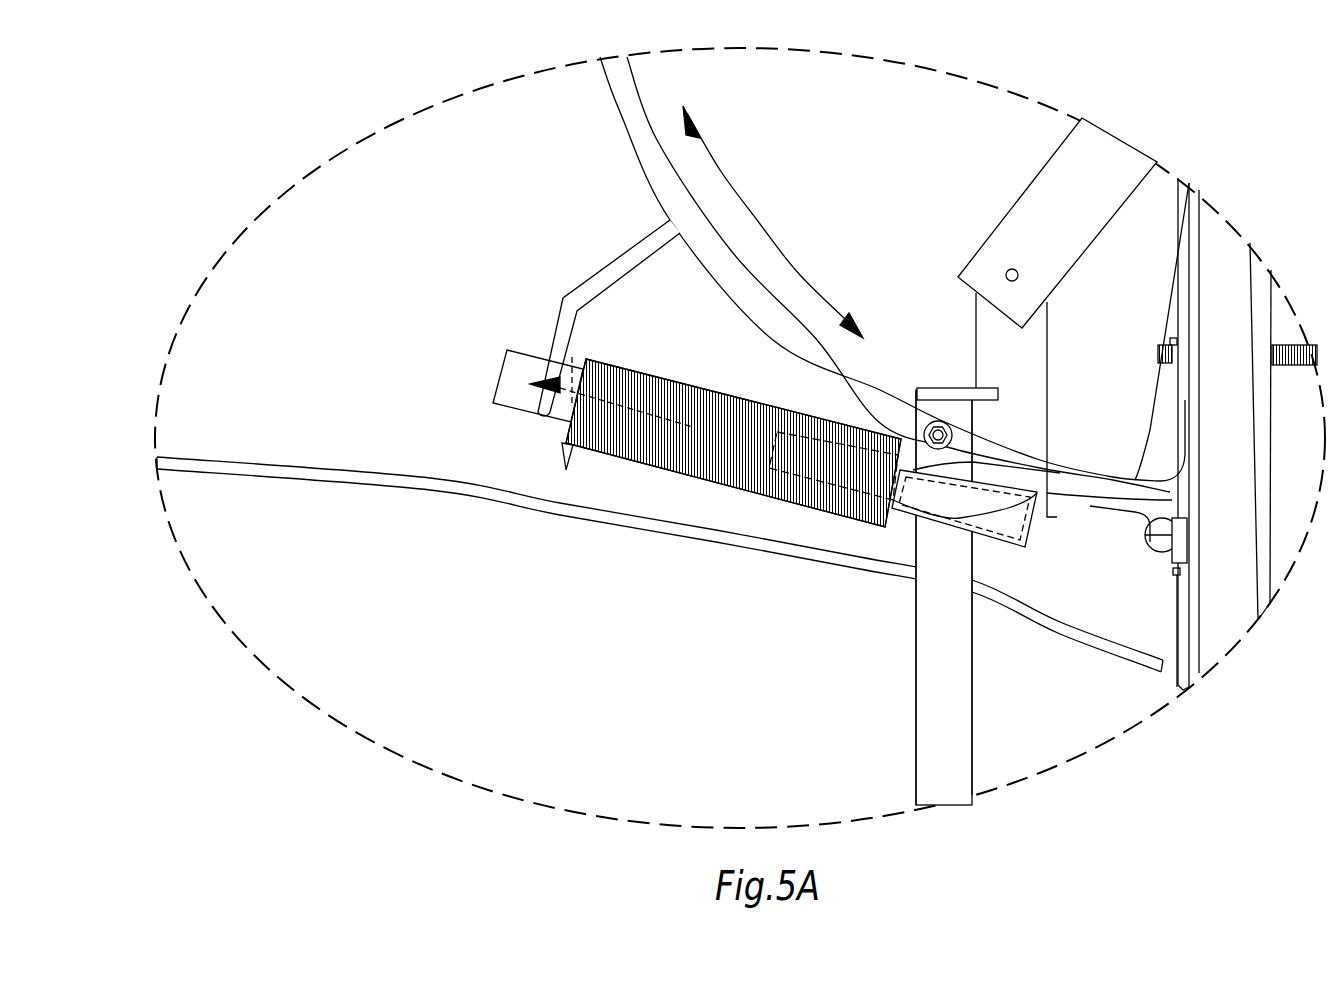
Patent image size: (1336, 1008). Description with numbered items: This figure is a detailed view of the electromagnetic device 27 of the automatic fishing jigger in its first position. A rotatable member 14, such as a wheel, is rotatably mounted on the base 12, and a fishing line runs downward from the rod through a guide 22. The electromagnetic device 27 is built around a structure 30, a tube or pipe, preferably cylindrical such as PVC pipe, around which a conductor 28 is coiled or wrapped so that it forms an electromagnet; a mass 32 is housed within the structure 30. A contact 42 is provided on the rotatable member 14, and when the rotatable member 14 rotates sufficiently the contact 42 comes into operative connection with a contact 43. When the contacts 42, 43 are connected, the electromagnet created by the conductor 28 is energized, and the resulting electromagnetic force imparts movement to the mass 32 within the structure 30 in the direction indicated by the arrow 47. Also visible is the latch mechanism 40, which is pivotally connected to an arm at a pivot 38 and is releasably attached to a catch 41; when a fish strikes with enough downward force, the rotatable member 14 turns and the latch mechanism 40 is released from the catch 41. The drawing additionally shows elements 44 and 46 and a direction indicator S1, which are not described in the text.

The base 12 is at (916, 662).
The rotatable member 14 is at (620, 112).
The guide 22 is at (545, 513).
The electromagnetic device 27 is at (565, 450).
The conductor 28 is at (665, 370).
The structure 30 is at (507, 372).
The mass 32 is at (1030, 527).
The pivot 38 is at (1005, 273).
The latch mechanism 40 is at (976, 330).
The catch 41 is at (988, 388).
The contact 42 is at (1152, 542).
The contact 43 is at (1168, 565).
The post 44 is at (1176, 612).
The bar 46 is at (1258, 457).
The arrow 47 is at (573, 357).
The direction of movement S1 is at (757, 223).